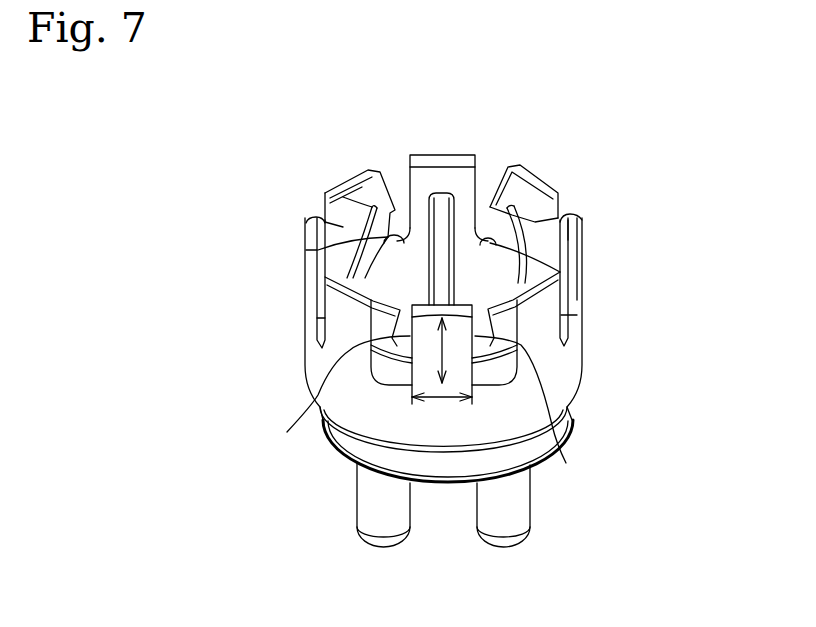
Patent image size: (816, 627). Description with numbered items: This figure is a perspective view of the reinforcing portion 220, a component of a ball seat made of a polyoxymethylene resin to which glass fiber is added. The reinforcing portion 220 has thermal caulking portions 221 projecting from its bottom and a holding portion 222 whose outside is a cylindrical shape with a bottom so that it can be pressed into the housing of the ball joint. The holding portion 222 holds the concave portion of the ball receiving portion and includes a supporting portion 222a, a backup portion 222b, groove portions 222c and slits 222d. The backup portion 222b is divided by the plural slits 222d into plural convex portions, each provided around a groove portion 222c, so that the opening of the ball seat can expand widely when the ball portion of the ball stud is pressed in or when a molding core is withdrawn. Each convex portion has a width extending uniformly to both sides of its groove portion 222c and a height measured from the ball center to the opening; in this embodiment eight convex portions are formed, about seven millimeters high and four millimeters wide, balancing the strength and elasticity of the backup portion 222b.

The reinforcing portion 220 is at (582, 188).
The thermal caulking portions 221 is at (383, 518).
The holding portion 222 is at (583, 365).
The supporting portion 222a is at (582, 246).
The backup portion 222b is at (325, 193).
The groove portions 222c is at (605, 282).
The slits 222d is at (366, 210).